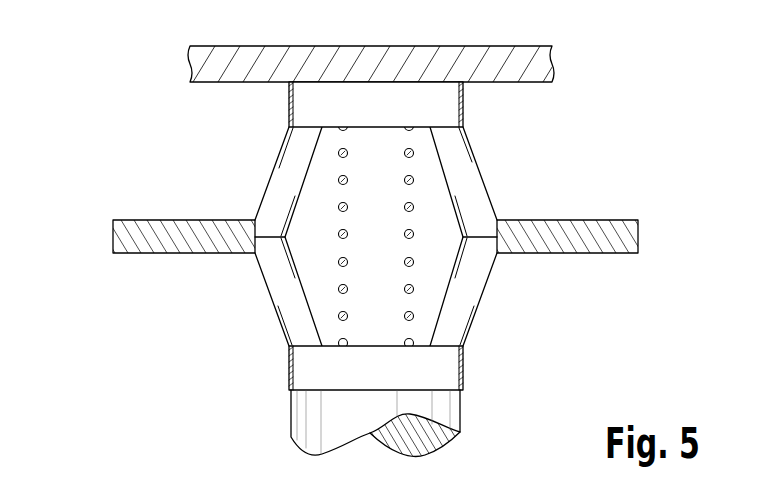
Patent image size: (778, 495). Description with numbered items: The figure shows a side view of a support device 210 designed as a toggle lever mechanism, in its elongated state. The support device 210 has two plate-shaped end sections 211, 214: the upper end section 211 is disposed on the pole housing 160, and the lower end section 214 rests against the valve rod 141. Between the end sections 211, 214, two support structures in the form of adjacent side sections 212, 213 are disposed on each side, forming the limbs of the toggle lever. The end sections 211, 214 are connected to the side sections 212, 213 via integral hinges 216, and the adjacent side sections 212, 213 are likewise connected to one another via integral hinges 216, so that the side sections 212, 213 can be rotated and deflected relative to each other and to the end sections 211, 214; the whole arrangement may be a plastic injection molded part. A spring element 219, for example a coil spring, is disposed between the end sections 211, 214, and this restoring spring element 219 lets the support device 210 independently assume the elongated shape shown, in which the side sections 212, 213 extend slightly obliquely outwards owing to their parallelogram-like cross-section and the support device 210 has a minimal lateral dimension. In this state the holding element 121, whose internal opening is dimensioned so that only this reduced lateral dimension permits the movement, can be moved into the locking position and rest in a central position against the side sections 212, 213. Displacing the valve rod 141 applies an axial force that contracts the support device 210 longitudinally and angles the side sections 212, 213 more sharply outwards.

The pole housing 160 is at (535, 63).
The holding element 121 is at (141, 228).
The support device 210 is at (297, 236).
The end section 211 is at (438, 105).
The side section 212 is at (287, 180).
The side section 213 is at (288, 297).
The end section 214 is at (437, 370).
The integral hinges 216 is at (289, 130).
The spring element 219 is at (411, 183).
The valve rod 141 is at (308, 414).